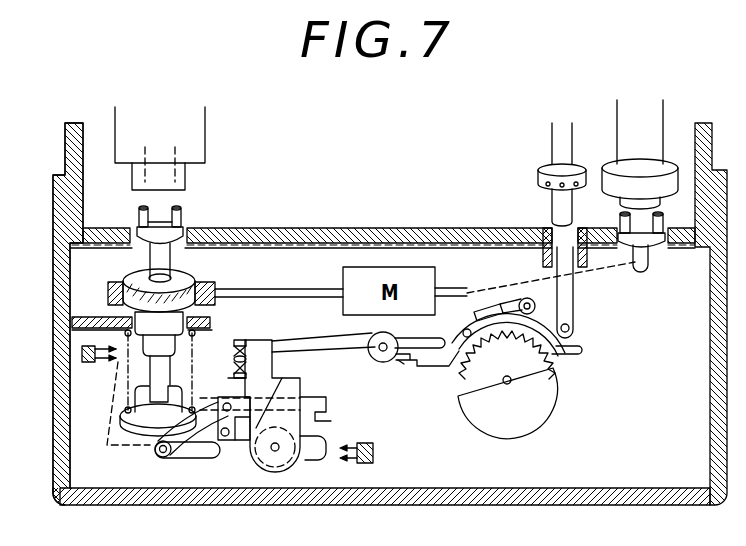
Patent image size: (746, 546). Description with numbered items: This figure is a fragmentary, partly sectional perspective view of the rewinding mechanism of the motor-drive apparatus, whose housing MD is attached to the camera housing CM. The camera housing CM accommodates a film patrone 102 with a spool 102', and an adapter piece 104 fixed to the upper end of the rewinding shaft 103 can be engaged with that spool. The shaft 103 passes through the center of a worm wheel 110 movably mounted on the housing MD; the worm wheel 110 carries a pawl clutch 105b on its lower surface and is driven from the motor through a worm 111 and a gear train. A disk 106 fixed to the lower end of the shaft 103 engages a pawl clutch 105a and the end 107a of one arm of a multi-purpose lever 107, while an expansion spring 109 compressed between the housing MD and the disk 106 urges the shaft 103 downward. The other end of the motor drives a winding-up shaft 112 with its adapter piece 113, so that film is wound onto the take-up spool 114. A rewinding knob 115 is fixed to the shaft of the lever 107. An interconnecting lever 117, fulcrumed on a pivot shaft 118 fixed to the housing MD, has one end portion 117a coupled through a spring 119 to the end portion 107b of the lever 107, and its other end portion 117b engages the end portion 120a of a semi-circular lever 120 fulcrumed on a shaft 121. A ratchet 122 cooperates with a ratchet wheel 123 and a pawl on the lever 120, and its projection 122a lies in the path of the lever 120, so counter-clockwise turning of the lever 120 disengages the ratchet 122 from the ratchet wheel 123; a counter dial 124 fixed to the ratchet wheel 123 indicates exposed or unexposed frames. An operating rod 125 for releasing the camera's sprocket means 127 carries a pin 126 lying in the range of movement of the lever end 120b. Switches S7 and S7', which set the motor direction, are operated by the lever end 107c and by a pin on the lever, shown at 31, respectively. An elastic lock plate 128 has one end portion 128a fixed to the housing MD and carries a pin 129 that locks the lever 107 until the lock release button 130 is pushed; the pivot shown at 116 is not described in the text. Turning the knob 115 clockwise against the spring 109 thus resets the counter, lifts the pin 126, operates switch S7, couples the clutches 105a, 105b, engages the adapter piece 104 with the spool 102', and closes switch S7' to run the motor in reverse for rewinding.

The camera housing CM is at (76, 124).
The film patrone 102 is at (183, 135).
The spool 102' is at (189, 170).
The adapter piece 104 is at (184, 216).
The rewinding shaft 103 is at (149, 264).
The worm wheel 110 is at (196, 262).
The worm 111 is at (207, 288).
The pawl clutch 105a is at (140, 392).
The pawl clutch 105b is at (178, 339).
The disk 106 is at (118, 415).
The multi-purpose lever 107 is at (213, 458).
The end of lever arm 107a is at (153, 448).
The end portion of lever 107b is at (267, 344).
The end of lever 107c is at (319, 443).
The expansion spring 109 is at (133, 391).
The switch S7' is at (77, 365).
The apparatus housing MD is at (72, 381).
The winding-up shaft 112 is at (650, 266).
The adapter piece 113 is at (668, 212).
The take up spool 114 is at (623, 138).
The rewinding operation knob 115 is at (297, 384).
The cam pivot 116 is at (275, 452).
The interconnecting lever 117 is at (343, 350).
The end portion of interconnecting lever 117a is at (234, 370).
The end portion of interconnecting lever 117b is at (428, 352).
The pivot shaft 118 is at (378, 351).
The spring 119 is at (233, 347).
The semi-circular lever 120 is at (455, 372).
The end portion of semi-circular lever 120a is at (404, 366).
The lever end 120b is at (579, 352).
The shaft 121 is at (463, 325).
The ratchet 122 is at (478, 308).
The projection 122a is at (503, 305).
The ratchet wheel 123 is at (545, 362).
The counter dial 124 is at (544, 396).
The operating rod 125 is at (566, 295).
The pin 126 is at (569, 327).
The sprocket means 127 is at (556, 147).
The elastic lock plate 128 is at (230, 443).
The end portion of lock plate 128a is at (322, 415).
The pin 129 is at (200, 450).
The lock release button 130 is at (164, 456).
The pivot 31 is at (155, 455).
The switch S7 is at (374, 452).